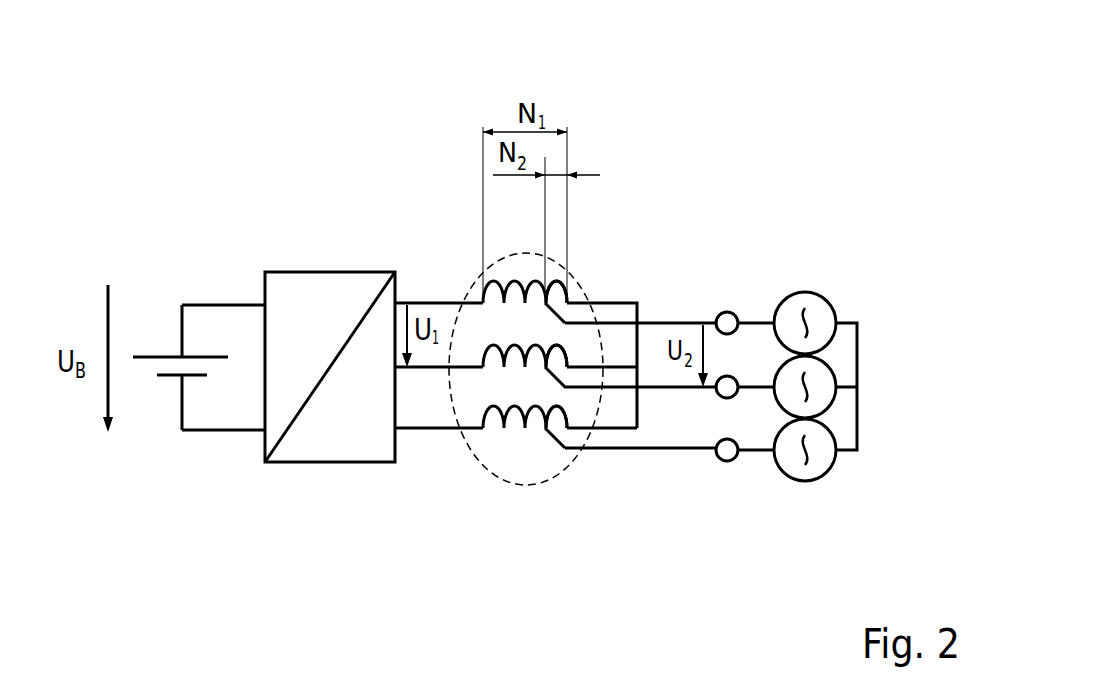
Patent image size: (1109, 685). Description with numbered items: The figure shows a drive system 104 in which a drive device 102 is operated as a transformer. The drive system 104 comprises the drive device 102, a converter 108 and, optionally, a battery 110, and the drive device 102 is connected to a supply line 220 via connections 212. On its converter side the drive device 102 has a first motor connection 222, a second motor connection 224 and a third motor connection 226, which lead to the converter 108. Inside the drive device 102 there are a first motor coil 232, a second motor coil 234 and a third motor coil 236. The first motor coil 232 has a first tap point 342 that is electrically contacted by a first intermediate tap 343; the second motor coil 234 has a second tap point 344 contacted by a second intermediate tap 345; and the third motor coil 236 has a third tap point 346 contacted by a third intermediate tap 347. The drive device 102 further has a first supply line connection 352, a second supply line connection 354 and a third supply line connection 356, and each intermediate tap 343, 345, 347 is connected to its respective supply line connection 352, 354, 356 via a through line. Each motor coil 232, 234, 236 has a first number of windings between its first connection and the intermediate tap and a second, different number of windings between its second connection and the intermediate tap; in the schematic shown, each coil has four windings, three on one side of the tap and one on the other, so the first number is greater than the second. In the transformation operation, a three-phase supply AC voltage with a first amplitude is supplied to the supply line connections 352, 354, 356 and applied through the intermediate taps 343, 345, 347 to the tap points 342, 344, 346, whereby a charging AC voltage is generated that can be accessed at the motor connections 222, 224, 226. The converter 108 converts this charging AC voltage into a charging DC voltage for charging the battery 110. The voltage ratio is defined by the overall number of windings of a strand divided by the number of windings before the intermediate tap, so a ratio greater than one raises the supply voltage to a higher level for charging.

The drive device 102 is at (462, 467).
The drive system 104 is at (158, 128).
The converter 108 is at (322, 270).
The battery 110 is at (161, 400).
The connections 212 is at (732, 293).
The supply line 220 is at (821, 271).
The first motor connection 222 is at (462, 303).
The second motor connection 224 is at (448, 367).
The third motor connection 226 is at (486, 382).
The first motor coil 232 is at (513, 265).
The second motor coil 234 is at (460, 428).
The third motor coil 236 is at (509, 442).
The first tap point 342 is at (547, 300).
The first intermediate tap 343 is at (562, 315).
The second tap point 344 is at (575, 323).
The second intermediate tap 345 is at (592, 426).
The third tap point 346 is at (540, 430).
The third intermediate tap 347 is at (553, 445).
The first supply line connection 352 is at (550, 352).
The second supply line connection 354 is at (597, 385).
The third supply line connection 356 is at (597, 448).